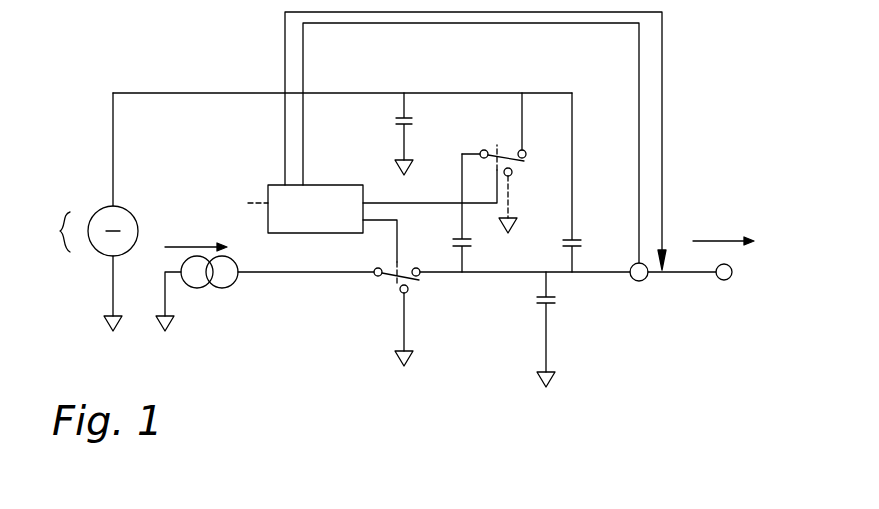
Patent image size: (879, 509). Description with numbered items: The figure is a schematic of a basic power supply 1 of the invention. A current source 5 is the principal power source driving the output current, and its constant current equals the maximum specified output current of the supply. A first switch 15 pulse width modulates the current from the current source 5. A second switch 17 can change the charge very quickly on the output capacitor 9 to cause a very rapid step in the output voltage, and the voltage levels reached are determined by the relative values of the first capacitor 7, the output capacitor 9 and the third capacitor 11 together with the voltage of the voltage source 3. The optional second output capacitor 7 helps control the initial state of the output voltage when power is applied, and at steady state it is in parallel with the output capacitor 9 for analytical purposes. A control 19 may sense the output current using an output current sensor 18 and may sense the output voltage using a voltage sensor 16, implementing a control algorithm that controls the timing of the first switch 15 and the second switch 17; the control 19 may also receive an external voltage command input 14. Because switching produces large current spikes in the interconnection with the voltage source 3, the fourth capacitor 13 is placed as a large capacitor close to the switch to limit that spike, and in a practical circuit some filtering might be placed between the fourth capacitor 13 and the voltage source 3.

The power supply 1 is at (96, 78).
The voltage source 3 is at (96, 201).
The current source 5 is at (207, 294).
The capacitor C1 7 is at (582, 244).
The capacitor C2 9 is at (535, 298).
The capacitor C3 11 is at (477, 254).
The capacitor C4 13 is at (404, 84).
The voltage command input v 14 is at (228, 201).
The switch S1 15 is at (384, 283).
The voltage sensor 16 is at (665, 278).
The switch S2 17 is at (535, 132).
The output current sensor 18 is at (631, 286).
The control A 19 is at (265, 171).